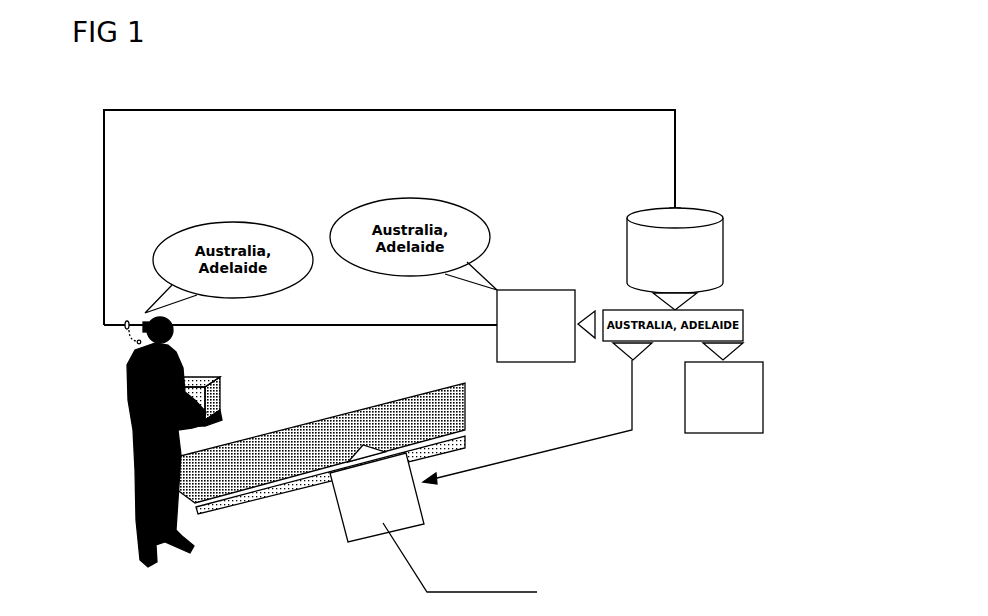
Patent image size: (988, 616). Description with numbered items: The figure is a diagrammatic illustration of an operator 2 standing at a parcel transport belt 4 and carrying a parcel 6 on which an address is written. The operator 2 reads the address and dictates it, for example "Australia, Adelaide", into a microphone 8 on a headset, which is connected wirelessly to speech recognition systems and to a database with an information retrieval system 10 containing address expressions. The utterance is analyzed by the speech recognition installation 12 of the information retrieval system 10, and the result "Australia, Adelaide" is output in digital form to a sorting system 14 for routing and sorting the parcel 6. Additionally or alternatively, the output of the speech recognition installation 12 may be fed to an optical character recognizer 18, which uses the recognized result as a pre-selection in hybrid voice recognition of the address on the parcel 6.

The operator 2 is at (103, 357).
The parcel transport belt 4 is at (218, 458).
The parcel 6 is at (196, 386).
The microphone 8 is at (168, 338).
The information retrieval system 10 is at (718, 238).
The speech recognition installation 12 is at (763, 412).
The sorting system 14 is at (537, 348).
The optical character recognizer 18 is at (402, 508).